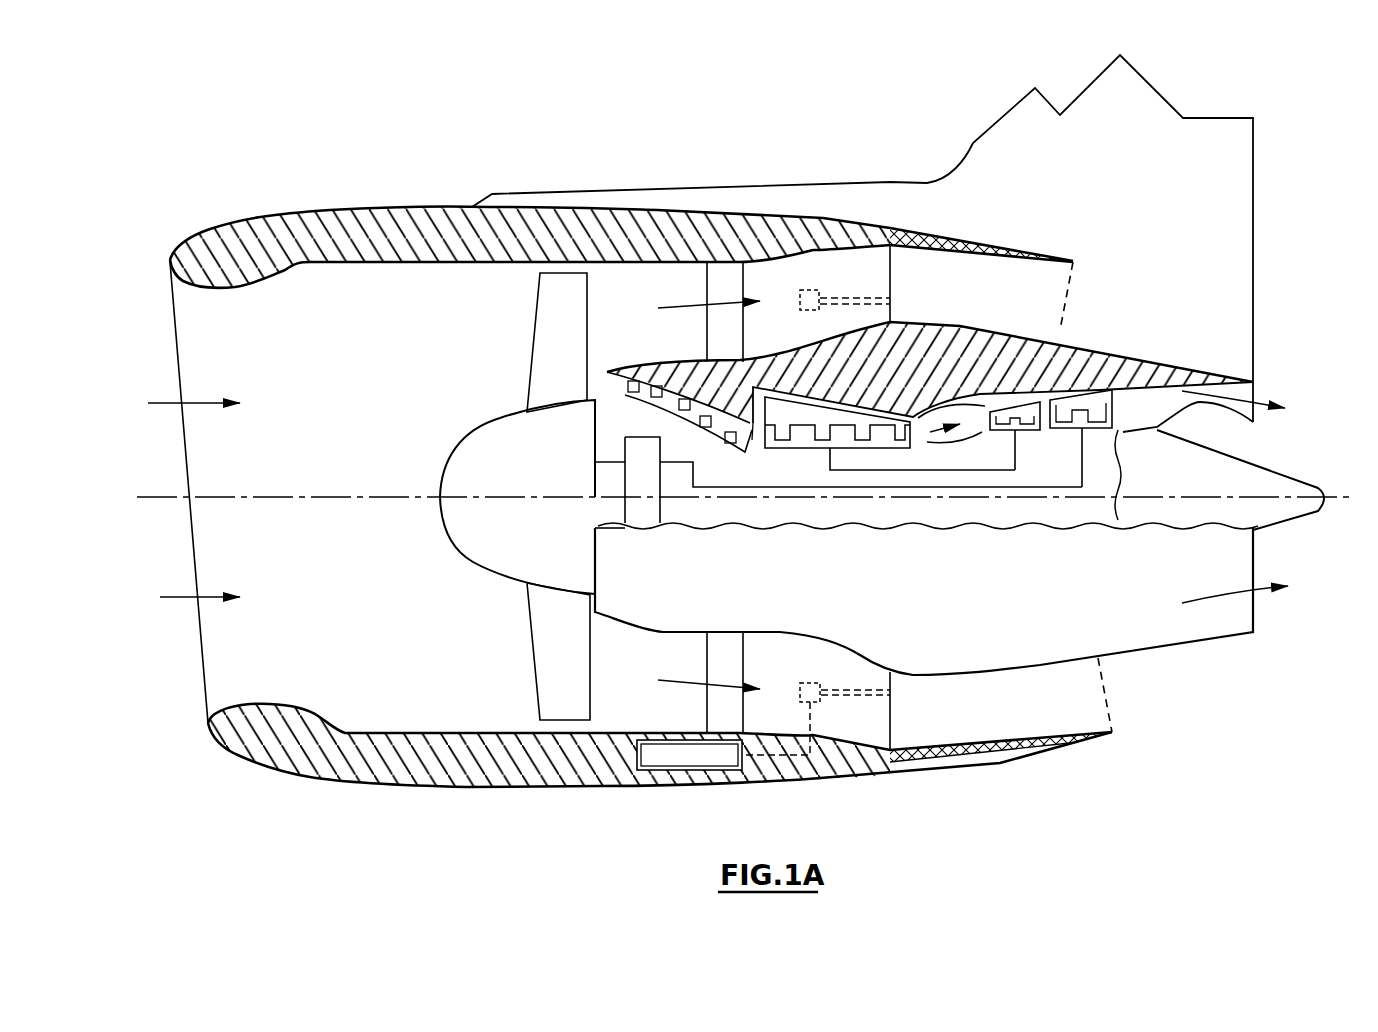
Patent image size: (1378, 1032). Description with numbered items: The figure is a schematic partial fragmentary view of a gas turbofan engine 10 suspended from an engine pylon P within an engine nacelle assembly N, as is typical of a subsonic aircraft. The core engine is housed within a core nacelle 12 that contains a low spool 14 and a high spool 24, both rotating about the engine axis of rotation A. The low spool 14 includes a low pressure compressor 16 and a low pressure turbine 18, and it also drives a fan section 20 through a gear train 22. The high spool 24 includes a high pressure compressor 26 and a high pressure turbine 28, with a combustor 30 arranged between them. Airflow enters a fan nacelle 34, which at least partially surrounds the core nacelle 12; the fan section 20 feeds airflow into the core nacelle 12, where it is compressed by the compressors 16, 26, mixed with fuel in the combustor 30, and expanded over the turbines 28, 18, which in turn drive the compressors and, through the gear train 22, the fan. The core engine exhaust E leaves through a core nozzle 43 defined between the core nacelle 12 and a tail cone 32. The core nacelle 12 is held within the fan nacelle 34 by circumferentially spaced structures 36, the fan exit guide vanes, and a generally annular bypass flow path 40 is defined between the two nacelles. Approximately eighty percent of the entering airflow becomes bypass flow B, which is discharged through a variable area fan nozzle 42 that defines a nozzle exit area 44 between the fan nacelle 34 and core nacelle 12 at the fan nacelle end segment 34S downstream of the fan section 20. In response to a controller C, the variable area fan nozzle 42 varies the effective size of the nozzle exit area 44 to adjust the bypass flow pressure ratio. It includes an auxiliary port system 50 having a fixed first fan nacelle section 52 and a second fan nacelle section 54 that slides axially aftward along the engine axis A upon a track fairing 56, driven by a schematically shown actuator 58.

The gas turbofan engine 10 is at (716, 453).
The core nacelle 12 is at (1102, 350).
The low spool 14 is at (888, 486).
The low pressure compressor 16 is at (722, 437).
The low pressure turbine 18 is at (1110, 440).
The fan section 20 is at (532, 650).
The gear train 22 is at (633, 498).
The high spool 24 is at (862, 478).
The high pressure compressor 26 is at (813, 433).
The high pressure turbine 28 is at (1035, 430).
The combustor 30 is at (965, 440).
The tail cone 32 is at (1255, 468).
The fan nacelle 34 is at (630, 214).
The fan nacelle end segment 34S is at (1058, 255).
The circumferentially spaced structures 36 is at (732, 338).
The bypass flow path 40 is at (649, 304).
The variable area fan nozzle 42 is at (821, 797).
The core nozzle 43 is at (1253, 393).
The nozzle exit area 44 is at (1055, 302).
The auxiliary port system 50 is at (940, 215).
The first fan nacelle section 52 is at (825, 217).
The second fan nacelle section 54 is at (980, 243).
The track fairing 56 is at (863, 308).
The actuator 58 is at (813, 290).
The engine nacelle assembly N is at (647, 229).
The engine pylon P is at (1232, 197).
The engine axis of rotation A is at (1350, 500).
The bypass flow B is at (687, 677).
The controller C is at (708, 784).
The core engine exhaust E is at (1240, 598).